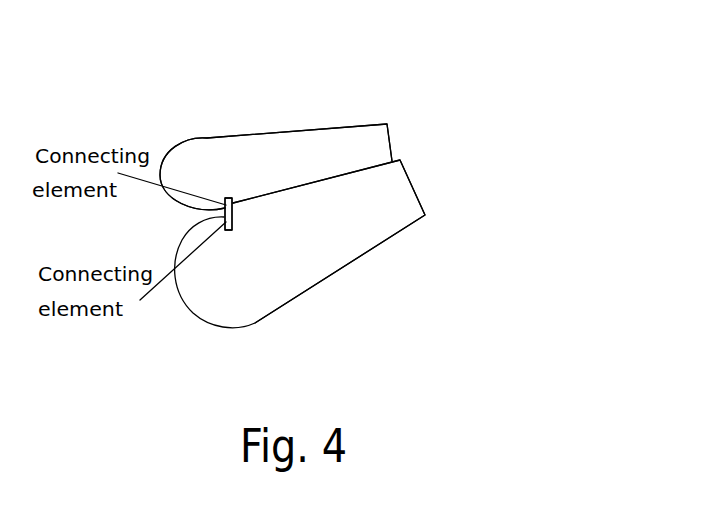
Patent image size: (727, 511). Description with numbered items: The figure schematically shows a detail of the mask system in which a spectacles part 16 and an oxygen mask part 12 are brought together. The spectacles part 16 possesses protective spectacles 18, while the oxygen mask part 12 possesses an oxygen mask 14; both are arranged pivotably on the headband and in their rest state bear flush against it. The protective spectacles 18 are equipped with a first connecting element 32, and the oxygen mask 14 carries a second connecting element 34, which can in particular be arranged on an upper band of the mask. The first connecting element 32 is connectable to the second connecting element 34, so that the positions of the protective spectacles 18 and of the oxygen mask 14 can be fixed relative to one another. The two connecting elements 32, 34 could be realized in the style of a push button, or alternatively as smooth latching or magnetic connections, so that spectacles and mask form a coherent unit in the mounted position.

The oxygen mask part 12 is at (207, 335).
The oxygen mask 14 is at (382, 228).
The spectacles part 16 is at (177, 131).
The protective spectacles 18 is at (210, 157).
The first connecting element 32 is at (232, 198).
The second connecting element 34 is at (233, 218).